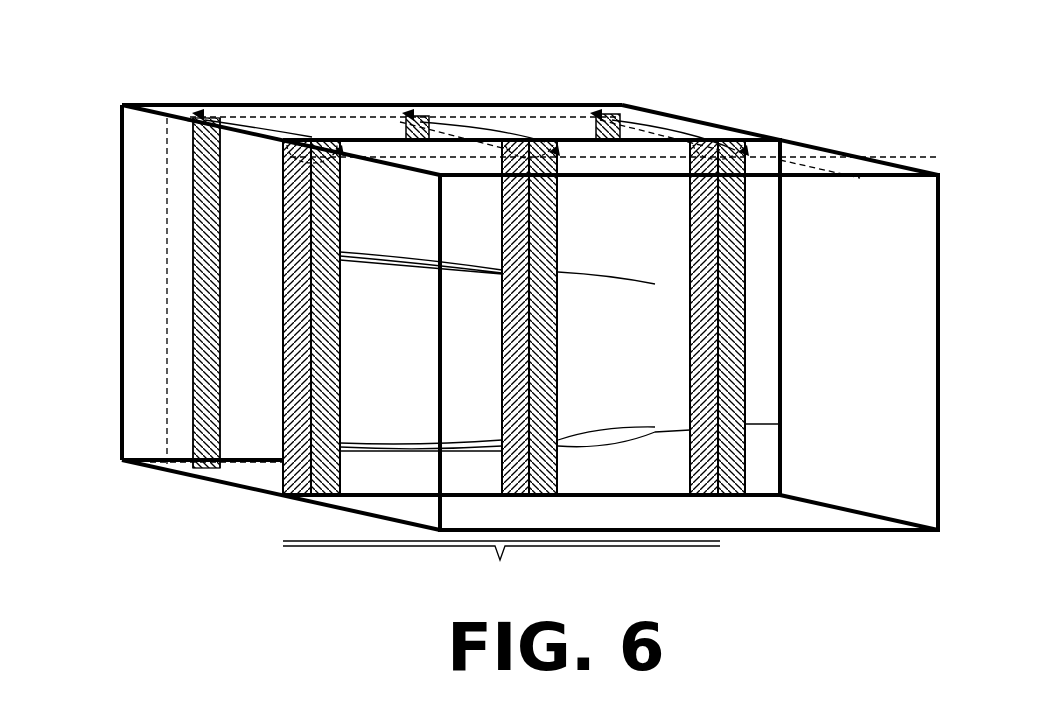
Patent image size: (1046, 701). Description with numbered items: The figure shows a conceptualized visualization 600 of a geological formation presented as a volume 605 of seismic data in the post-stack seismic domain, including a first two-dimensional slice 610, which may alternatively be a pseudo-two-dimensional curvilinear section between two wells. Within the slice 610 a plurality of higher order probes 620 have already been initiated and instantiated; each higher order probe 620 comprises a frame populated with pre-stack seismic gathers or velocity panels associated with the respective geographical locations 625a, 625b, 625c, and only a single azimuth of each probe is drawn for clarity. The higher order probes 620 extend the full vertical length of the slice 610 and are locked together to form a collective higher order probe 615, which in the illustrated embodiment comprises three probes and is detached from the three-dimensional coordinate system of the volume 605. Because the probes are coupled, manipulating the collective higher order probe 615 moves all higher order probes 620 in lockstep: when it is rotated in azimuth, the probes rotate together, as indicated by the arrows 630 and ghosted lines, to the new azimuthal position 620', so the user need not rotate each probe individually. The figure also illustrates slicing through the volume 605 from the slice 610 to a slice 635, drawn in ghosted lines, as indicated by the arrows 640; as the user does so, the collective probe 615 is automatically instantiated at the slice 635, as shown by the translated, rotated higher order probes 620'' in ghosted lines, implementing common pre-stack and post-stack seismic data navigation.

The visualization 600 is at (178, 25).
The volume 605 is at (122, 103).
The first 2D slice 610 is at (785, 316).
The collective higher order probe 615 is at (531, 366).
The higher order probe 620 is at (507, 351).
The new azimuthal position 620' is at (565, 516).
The translated, rotated higher order probes 620'' is at (415, 278).
The geographical location 625a is at (312, 142).
The geographical location 625b is at (530, 150).
The geographical location 625c is at (720, 150).
The arrows 630 is at (285, 180).
The slice 635 is at (167, 309).
The arrows 640 is at (285, 135).